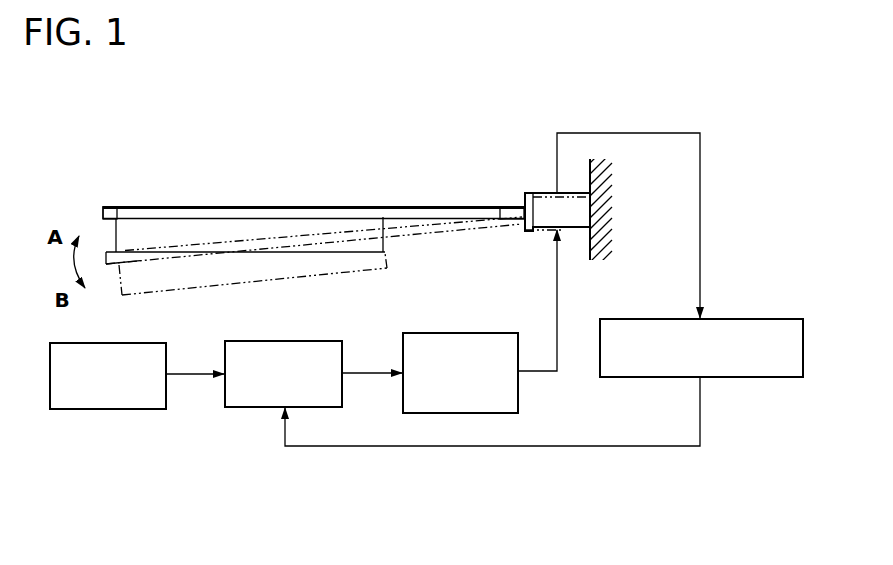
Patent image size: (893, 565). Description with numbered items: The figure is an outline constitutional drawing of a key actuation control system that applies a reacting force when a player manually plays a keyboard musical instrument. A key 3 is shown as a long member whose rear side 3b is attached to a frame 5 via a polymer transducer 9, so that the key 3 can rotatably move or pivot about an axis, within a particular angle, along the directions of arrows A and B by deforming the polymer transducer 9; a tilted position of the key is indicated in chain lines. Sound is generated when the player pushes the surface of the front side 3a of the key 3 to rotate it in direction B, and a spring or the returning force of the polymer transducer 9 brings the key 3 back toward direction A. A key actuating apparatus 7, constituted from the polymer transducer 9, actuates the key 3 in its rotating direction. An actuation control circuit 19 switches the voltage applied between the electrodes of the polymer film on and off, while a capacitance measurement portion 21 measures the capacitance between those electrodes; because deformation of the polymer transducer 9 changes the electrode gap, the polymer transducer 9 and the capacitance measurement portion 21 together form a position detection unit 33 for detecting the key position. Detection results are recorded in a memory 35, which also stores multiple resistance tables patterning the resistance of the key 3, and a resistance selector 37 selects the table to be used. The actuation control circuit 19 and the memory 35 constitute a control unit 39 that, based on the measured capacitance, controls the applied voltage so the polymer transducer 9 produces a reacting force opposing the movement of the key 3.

The key 3 is at (219, 237).
The front side 3a is at (113, 207).
The rear side 3b is at (469, 206).
The frame 5 is at (600, 259).
The key actuating apparatus 7 is at (531, 177).
The polymer transducer 9 is at (544, 193).
The actuation control circuit 19 is at (462, 333).
The capacitance measurement portion 21 is at (764, 319).
The position detection unit 33 is at (746, 249).
The memory 35 is at (250, 407).
The resistance selector 37 is at (108, 409).
The control unit 39 is at (389, 469).